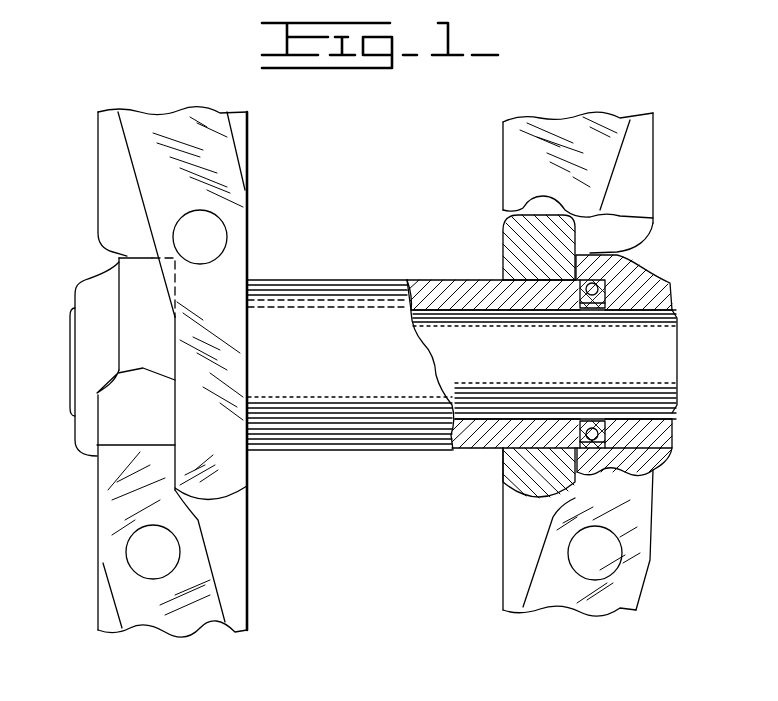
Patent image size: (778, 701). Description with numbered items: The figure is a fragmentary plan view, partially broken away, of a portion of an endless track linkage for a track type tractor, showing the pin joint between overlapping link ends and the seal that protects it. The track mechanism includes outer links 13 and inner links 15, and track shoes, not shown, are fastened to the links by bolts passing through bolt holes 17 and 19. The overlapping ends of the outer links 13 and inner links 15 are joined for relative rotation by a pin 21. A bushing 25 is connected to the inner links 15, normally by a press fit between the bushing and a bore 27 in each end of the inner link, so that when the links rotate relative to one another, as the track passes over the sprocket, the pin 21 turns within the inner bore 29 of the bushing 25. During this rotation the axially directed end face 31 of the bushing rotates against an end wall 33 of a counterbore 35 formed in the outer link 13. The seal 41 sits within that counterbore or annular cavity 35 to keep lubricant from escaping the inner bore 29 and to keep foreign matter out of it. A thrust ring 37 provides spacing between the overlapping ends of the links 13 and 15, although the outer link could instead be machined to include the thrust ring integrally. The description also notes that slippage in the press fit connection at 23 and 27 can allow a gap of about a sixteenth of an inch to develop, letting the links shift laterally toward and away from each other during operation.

The outer link 13 is at (108, 525).
The inner link 15 is at (233, 477).
The bolt hole 17 is at (150, 572).
The bolt hole 19 is at (218, 236).
The pin 21 is at (663, 352).
The press fit connection 23 is at (674, 316).
The bushing 25 is at (413, 290).
The bore 27 is at (488, 293).
The inner bore 29 is at (434, 312).
The end face 31 is at (588, 309).
The end wall 33 is at (593, 309).
The counterbore 35 is at (579, 281).
The thrust ring 37 is at (596, 432).
The seal 41 is at (605, 436).